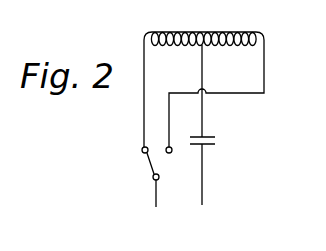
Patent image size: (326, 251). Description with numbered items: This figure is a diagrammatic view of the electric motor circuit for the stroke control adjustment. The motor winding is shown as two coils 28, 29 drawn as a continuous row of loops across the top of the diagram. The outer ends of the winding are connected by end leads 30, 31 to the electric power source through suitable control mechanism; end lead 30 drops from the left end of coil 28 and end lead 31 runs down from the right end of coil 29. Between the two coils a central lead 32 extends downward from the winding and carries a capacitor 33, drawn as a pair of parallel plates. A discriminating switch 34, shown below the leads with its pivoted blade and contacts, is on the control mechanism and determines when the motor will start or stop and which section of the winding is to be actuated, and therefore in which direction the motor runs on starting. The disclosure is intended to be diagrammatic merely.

The coil 28 is at (183, 32).
The coil 29 is at (252, 31).
The end lead 30 is at (145, 80).
The end lead 31 is at (265, 61).
The central lead 32 is at (203, 70).
The capacitor 33 is at (210, 135).
The discriminating switch 34 is at (150, 163).